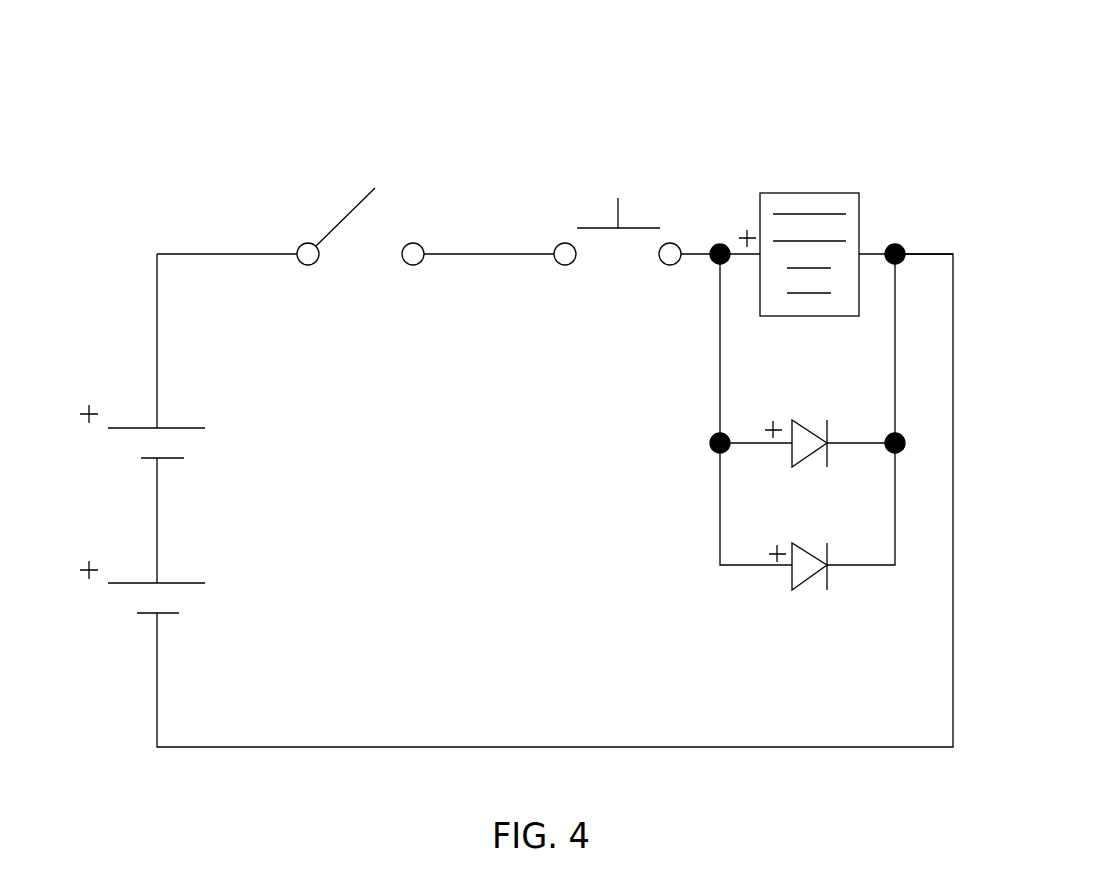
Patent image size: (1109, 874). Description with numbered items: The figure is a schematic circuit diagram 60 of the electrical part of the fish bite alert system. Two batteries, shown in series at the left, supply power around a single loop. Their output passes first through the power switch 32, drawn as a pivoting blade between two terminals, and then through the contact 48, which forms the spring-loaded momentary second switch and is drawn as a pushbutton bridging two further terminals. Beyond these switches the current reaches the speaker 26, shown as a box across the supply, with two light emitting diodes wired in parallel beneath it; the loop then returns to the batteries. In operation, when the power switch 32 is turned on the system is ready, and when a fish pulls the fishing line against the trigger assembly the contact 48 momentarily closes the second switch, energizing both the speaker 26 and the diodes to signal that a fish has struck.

The schematic circuit diagram 60 is at (782, 86).
The power switch 32 is at (347, 215).
The contact 48 is at (618, 214).
The speaker 26 is at (840, 193).